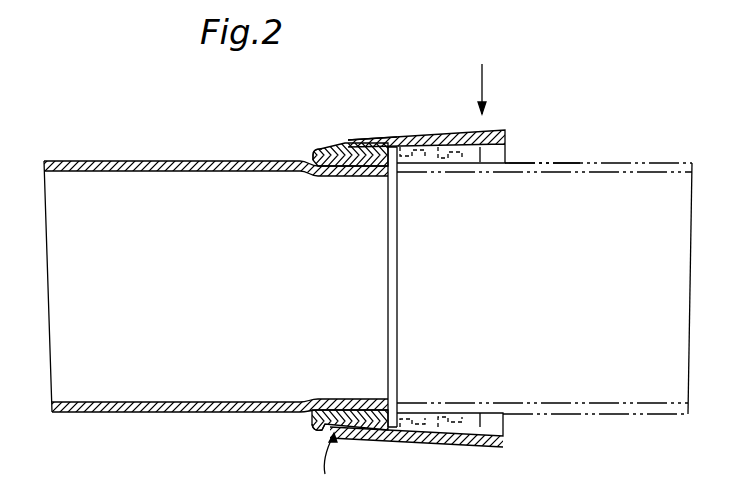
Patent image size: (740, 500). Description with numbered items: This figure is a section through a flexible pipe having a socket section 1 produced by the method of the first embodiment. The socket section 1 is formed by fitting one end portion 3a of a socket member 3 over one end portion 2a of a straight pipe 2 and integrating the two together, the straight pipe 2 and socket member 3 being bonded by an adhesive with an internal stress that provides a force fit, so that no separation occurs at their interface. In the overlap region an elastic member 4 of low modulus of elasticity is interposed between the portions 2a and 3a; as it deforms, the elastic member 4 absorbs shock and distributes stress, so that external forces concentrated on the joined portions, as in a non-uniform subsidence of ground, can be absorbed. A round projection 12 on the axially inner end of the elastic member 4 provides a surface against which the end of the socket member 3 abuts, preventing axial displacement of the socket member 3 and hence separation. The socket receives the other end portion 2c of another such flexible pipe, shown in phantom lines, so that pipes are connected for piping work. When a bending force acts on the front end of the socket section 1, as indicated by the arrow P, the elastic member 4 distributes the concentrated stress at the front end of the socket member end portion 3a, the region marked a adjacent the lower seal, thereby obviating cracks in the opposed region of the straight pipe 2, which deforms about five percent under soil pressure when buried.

The socket section 1 is at (505, 423).
The straight pipe 2 is at (122, 161).
The one end portion of straight pipe 2a is at (330, 178).
The other end portion of another flexible pipe 2c is at (523, 161).
The socket member 3 is at (405, 137).
The one end portion of socket member 3a is at (357, 138).
The elastic member 4 is at (338, 147).
The round projection 12 is at (321, 148).
The arrow indicating bending force P is at (489, 82).
The gap a is at (327, 464).